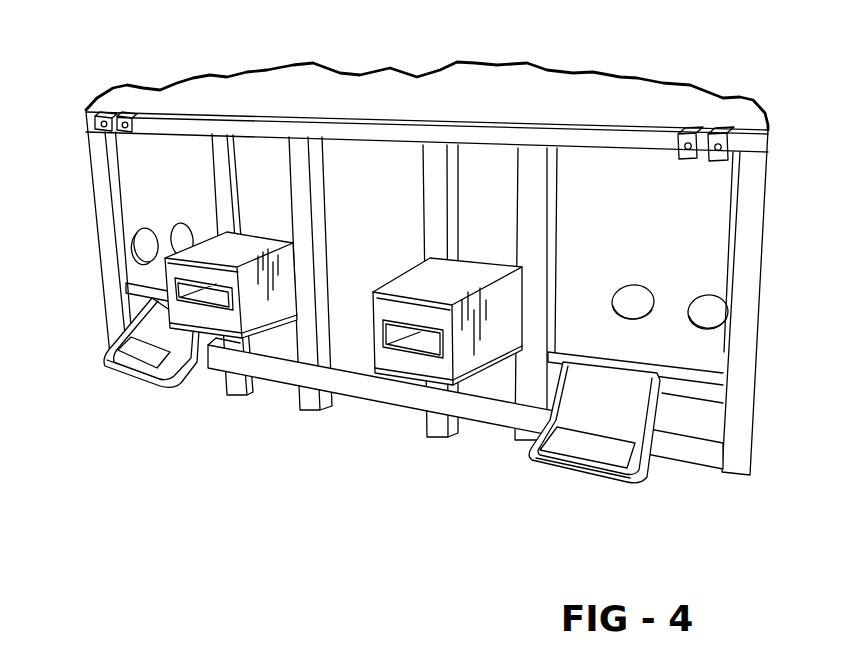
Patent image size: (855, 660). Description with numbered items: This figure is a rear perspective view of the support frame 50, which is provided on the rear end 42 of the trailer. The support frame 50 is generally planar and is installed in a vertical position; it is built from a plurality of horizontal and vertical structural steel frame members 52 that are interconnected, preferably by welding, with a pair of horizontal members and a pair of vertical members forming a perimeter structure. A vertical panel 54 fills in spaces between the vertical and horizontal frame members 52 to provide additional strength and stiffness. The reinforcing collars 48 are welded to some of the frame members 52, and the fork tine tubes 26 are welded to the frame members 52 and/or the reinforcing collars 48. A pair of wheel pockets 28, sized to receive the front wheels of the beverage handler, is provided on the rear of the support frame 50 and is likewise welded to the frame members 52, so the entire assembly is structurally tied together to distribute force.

The fork tine tube 26 is at (216, 313).
The wheel pocket 28 is at (125, 372).
The rear end 42 is at (632, 95).
The reinforcing collar 48 is at (272, 322).
The support frame 50 is at (733, 375).
The frame member 52 is at (237, 170).
The vertical panel 54 is at (611, 216).